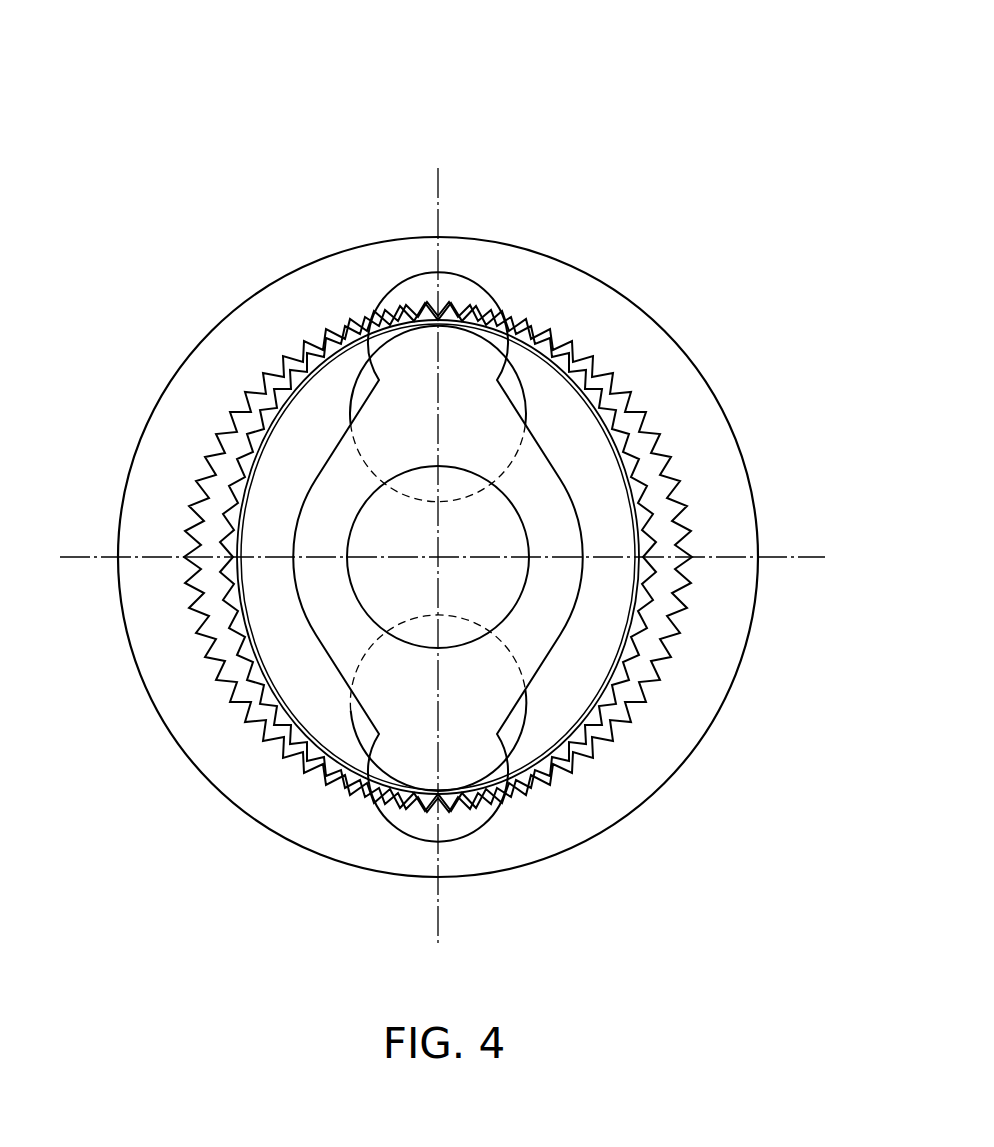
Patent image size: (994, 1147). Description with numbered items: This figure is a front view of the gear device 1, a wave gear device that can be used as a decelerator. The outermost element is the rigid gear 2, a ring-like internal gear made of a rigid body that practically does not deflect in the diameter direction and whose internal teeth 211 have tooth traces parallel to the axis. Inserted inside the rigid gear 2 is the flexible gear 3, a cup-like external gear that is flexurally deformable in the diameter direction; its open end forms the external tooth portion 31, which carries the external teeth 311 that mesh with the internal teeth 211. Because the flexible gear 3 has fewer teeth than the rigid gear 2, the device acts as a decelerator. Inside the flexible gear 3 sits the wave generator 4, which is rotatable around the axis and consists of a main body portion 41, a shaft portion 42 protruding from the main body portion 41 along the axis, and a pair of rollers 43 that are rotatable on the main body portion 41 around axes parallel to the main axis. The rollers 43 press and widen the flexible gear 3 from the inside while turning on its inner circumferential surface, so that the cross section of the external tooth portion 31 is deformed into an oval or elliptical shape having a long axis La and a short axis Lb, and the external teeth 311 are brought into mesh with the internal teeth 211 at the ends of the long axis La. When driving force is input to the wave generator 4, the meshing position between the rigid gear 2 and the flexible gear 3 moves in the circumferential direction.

The gear device 1 is at (638, 132).
The rigid gear 2 is at (473, 531).
The internal teeth 211 is at (672, 617).
The flexible gear 3 is at (507, 577).
The external tooth portion 31 is at (628, 712).
The external teeth 311 is at (653, 667).
The wave generator 4 is at (325, 598).
The main body portion 41 is at (327, 460).
The shaft portion 42 is at (353, 527).
The rollers 43 is at (355, 362).
The long axis La is at (438, 188).
The short axis Lb is at (793, 560).